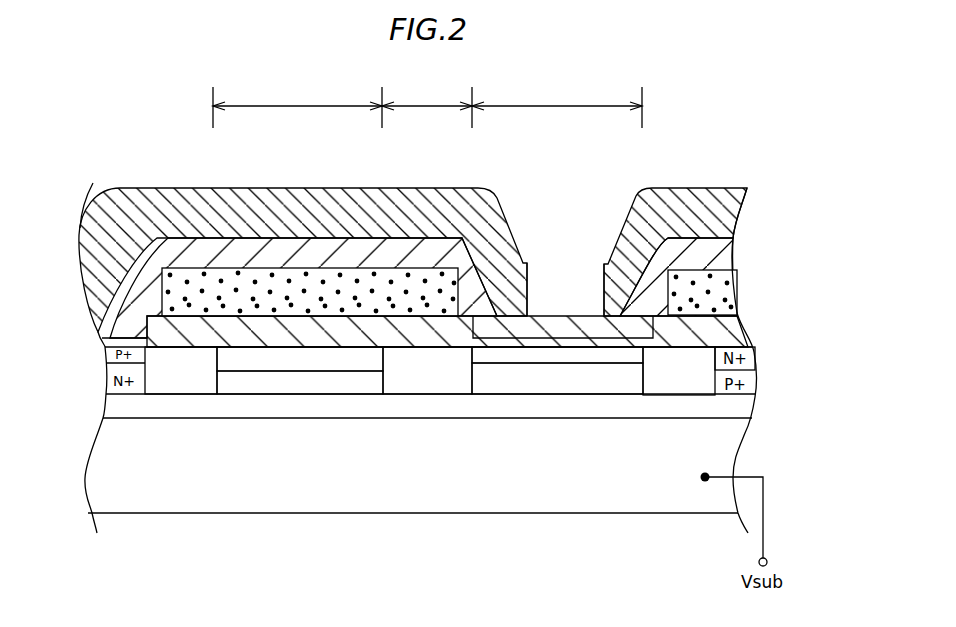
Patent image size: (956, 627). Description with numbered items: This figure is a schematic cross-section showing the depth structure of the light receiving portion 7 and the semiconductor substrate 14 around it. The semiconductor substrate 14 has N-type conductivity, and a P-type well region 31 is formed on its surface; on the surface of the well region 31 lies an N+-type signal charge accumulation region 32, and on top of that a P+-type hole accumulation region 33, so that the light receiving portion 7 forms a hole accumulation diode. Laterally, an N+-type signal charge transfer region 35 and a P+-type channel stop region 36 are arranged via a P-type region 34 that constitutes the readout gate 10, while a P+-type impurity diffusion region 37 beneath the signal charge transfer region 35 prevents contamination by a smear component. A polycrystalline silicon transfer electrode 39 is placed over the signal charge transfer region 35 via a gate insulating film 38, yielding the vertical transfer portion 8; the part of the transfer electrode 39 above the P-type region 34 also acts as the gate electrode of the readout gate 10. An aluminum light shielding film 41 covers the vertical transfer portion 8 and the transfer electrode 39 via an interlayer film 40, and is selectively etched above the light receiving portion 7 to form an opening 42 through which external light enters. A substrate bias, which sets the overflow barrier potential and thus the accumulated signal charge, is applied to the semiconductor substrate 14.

The light receiving portion 7 is at (557, 107).
The vertical transfer portion 8 is at (297, 107).
The readout gate 10 is at (427, 107).
The semiconductor substrate 14 is at (602, 490).
The P-type well region 31 is at (340, 408).
The signal charge accumulation region 32 is at (483, 382).
The hole accumulation region 33 is at (515, 357).
The P-type region 34 is at (413, 375).
The signal charge transfer region 35 is at (237, 365).
The channel stop region 36 is at (178, 388).
The impurity diffusion region 37 is at (278, 390).
The gate insulating film 38 is at (308, 332).
The transfer electrode 39 is at (247, 293).
The interlayer film 40 is at (193, 258).
The aluminum light shielding film 41 is at (428, 202).
The opening 42 is at (527, 266).